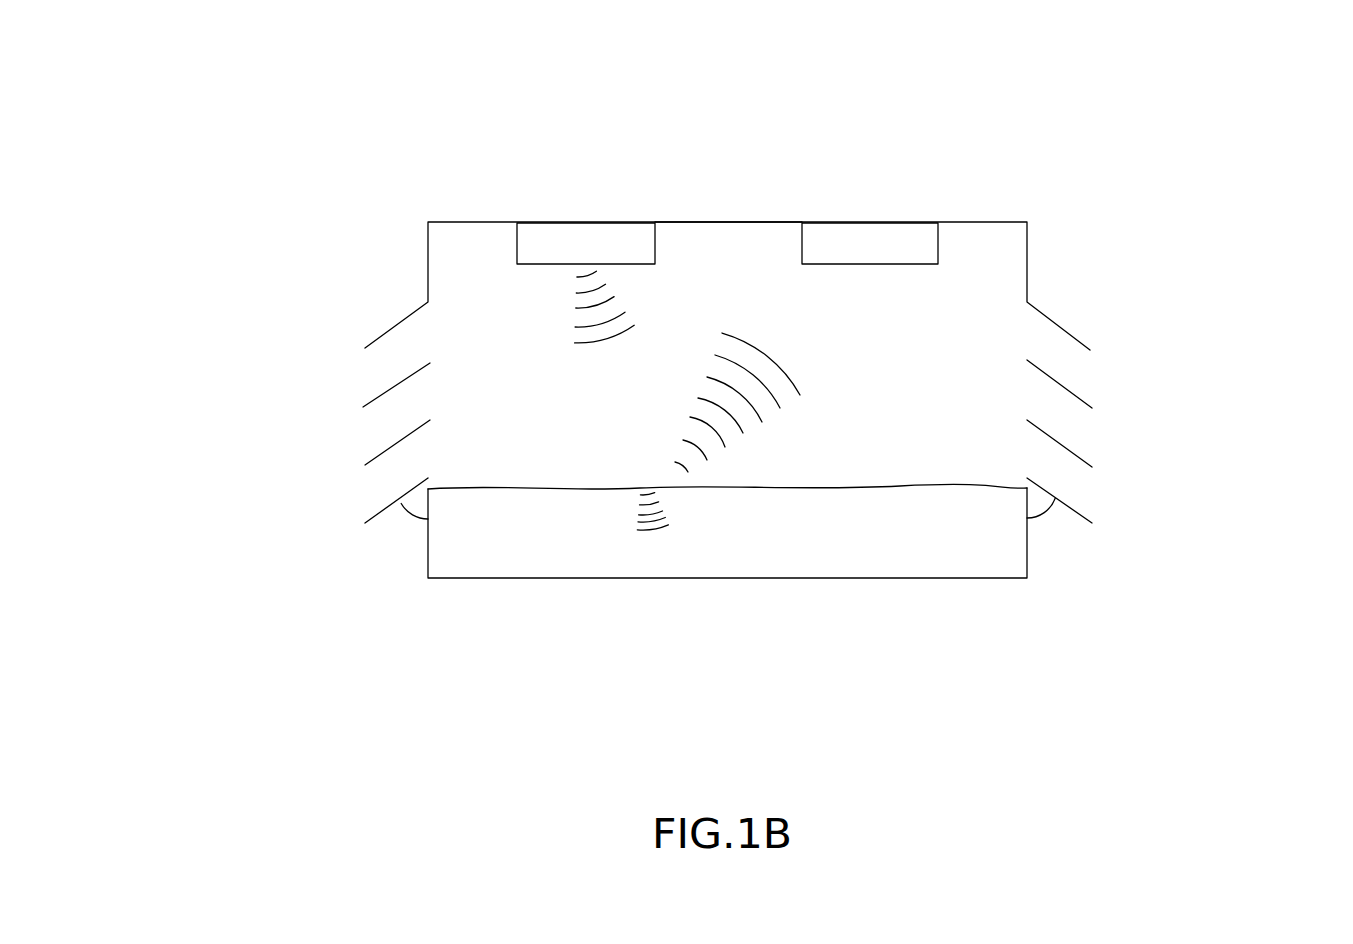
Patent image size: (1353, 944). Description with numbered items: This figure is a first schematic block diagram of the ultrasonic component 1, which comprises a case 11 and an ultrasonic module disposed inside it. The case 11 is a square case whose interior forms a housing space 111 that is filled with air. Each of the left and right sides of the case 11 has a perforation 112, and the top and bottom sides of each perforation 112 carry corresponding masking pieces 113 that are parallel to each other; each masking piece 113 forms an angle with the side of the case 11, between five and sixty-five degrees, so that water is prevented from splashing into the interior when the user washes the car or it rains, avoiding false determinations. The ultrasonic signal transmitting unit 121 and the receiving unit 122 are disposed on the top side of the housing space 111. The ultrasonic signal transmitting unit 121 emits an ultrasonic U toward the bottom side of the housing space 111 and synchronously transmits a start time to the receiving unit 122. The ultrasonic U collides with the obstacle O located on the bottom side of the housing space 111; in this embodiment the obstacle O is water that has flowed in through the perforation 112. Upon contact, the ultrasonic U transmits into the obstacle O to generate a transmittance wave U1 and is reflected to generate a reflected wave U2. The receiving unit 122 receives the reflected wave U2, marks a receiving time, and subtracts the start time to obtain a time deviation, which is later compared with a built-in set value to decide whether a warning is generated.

The ultrasonic component 1 is at (307, 267).
The case 11 is at (998, 221).
The housing space 111 is at (690, 248).
The perforation 112 is at (437, 335).
The masking piece 113 is at (377, 513).
The ultrasonic signal transmitting unit 121 is at (580, 238).
The receiving unit 122 is at (859, 238).
The ultrasonic U is at (573, 327).
The transmittance wave U1 is at (640, 530).
The reflected wave U2 is at (780, 368).
The obstacle O is at (890, 542).